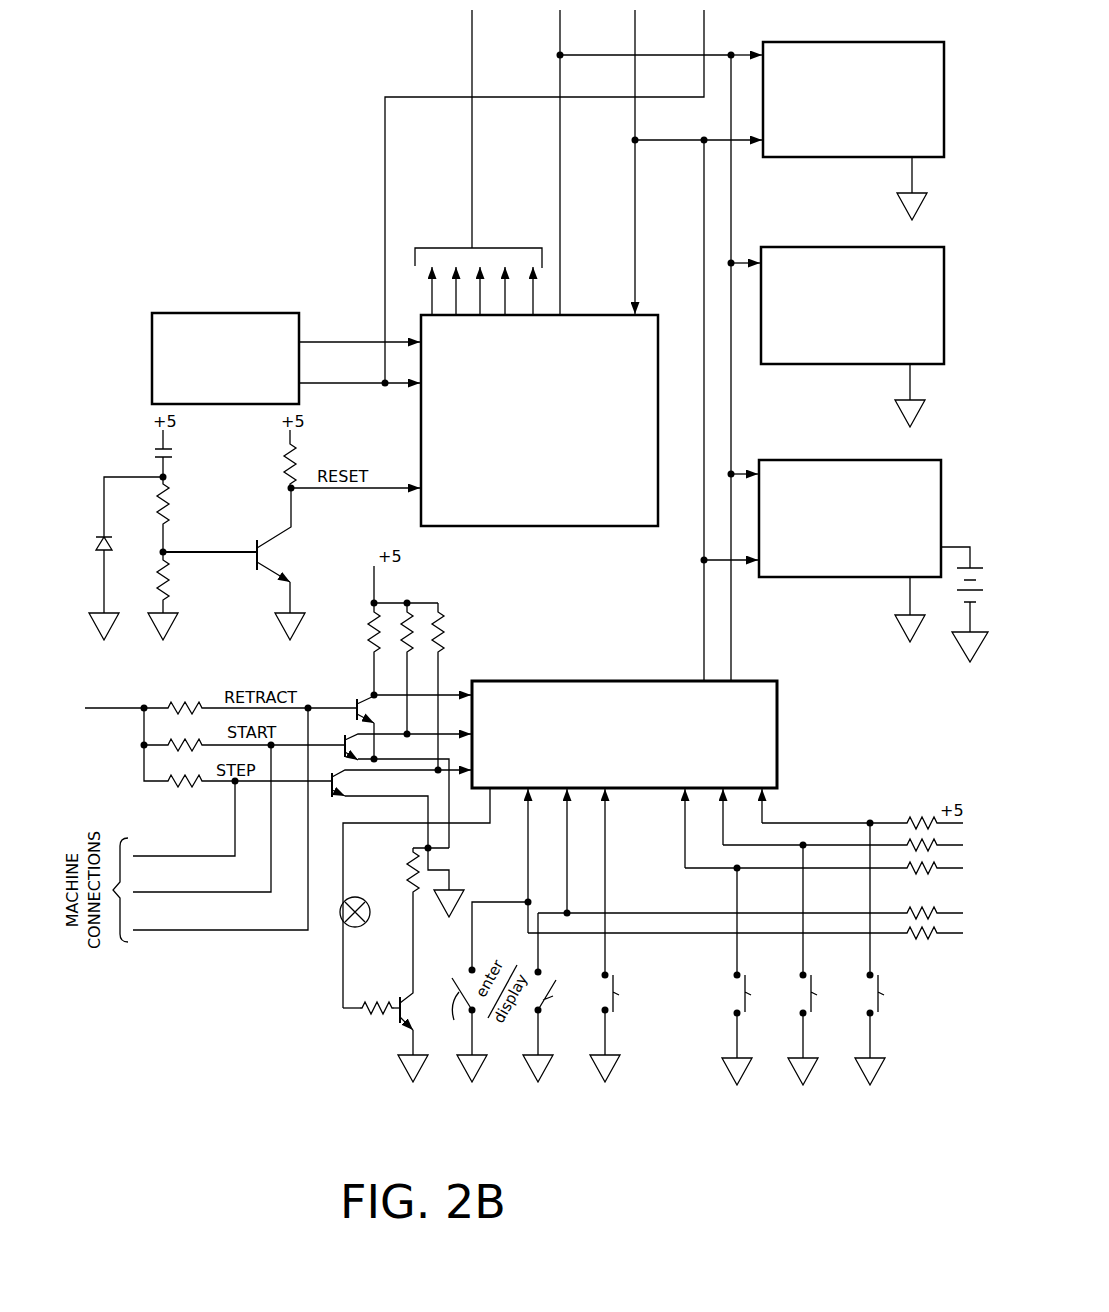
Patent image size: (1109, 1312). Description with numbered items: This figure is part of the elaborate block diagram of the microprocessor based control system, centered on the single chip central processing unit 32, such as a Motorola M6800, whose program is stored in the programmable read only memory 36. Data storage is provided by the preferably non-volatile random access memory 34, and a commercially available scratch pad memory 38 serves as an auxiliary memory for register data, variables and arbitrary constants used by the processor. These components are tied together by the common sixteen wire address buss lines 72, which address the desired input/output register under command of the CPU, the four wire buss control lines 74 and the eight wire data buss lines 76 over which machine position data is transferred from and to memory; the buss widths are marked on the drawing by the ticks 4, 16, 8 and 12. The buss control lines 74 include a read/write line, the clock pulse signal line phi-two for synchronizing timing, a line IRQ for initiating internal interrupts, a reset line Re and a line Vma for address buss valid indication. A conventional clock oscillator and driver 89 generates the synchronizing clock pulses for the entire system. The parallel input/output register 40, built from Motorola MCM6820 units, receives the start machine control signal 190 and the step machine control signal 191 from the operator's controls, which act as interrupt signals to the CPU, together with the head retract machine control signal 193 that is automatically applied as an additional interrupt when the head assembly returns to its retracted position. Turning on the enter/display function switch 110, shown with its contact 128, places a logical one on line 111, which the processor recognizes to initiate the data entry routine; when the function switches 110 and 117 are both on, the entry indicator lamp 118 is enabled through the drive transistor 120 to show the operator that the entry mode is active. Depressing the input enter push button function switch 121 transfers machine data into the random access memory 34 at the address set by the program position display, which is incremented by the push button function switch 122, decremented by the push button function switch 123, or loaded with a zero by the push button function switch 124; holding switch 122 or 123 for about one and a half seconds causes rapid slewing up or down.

The clock signal bus 4 is at (466, 34).
The address bus 16 is at (554, 34).
The data bus 8 is at (629, 34).
The control bus 12 is at (698, 34).
The scratch pad memory 38 is at (873, 42).
The programmable read only memory 36 is at (803, 247).
The random access memory 34 is at (788, 460).
The address buss lines 72 is at (560, 185).
The buss control lines 74 is at (472, 199).
The data buss lines 76 is at (635, 245).
The clock oscillator and driver 89 is at (230, 313).
The central processing unit 32 is at (590, 527).
The input/output register 40 is at (565, 681).
The step machine control signal 191 is at (190, 852).
The start machine control signal 190 is at (203, 890).
The head retract machine control signal 193 is at (220, 927).
The entry indicator lamp 118 is at (379, 889).
The drive transistor 120 is at (396, 1020).
The enter/display switch contact 128 is at (447, 985).
The line 111 is at (528, 877).
The enter/display function switch 110 is at (461, 1025).
The function switch 117 is at (556, 997).
The input enter push button function switch 121 is at (615, 1010).
The push button function switch 122 is at (734, 992).
The push button function switch 123 is at (797, 994).
The push button function switch 124 is at (882, 1010).